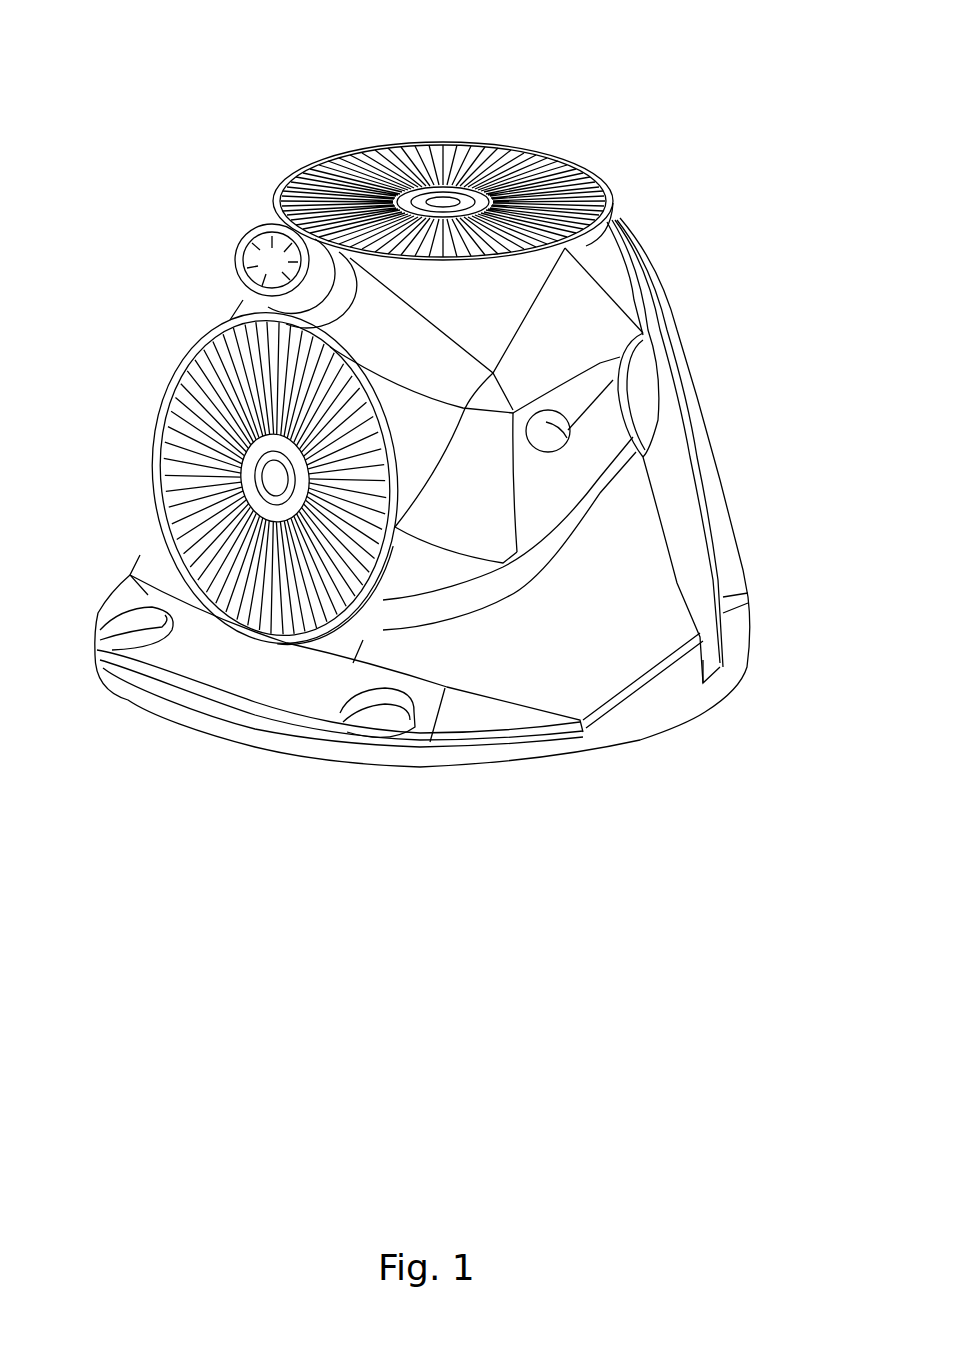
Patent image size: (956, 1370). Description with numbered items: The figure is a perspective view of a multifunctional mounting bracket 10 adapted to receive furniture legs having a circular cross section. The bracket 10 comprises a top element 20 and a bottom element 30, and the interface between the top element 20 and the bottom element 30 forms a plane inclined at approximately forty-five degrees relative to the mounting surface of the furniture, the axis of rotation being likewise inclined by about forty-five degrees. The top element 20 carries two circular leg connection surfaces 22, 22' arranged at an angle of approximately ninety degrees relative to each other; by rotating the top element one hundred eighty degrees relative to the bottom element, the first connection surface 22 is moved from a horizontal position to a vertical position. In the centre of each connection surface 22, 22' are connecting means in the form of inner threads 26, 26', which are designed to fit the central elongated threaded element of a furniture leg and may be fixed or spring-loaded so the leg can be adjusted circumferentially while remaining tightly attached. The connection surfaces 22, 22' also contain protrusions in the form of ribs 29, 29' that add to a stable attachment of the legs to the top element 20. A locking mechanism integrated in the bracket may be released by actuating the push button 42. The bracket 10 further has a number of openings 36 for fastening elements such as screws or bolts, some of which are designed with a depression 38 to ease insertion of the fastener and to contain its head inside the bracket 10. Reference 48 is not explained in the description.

The mounting bracket 10 is at (667, 128).
The top element 20 is at (617, 290).
The top element connection surface 22 is at (443, 137).
The top element connection surface 22' is at (220, 478).
The connecting means 26 is at (374, 139).
The connecting means 26' is at (176, 483).
The rib 29 is at (494, 201).
The rib 29' is at (261, 478).
The bottom element 30 is at (698, 456).
The opening 36 is at (125, 638).
The depression 38 is at (690, 545).
The push button 42 is at (258, 247).
The hole 48 is at (557, 437).